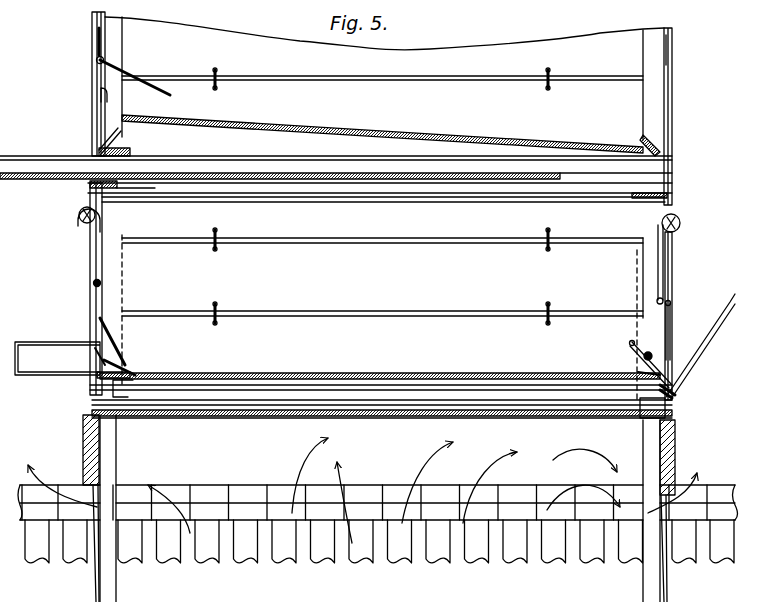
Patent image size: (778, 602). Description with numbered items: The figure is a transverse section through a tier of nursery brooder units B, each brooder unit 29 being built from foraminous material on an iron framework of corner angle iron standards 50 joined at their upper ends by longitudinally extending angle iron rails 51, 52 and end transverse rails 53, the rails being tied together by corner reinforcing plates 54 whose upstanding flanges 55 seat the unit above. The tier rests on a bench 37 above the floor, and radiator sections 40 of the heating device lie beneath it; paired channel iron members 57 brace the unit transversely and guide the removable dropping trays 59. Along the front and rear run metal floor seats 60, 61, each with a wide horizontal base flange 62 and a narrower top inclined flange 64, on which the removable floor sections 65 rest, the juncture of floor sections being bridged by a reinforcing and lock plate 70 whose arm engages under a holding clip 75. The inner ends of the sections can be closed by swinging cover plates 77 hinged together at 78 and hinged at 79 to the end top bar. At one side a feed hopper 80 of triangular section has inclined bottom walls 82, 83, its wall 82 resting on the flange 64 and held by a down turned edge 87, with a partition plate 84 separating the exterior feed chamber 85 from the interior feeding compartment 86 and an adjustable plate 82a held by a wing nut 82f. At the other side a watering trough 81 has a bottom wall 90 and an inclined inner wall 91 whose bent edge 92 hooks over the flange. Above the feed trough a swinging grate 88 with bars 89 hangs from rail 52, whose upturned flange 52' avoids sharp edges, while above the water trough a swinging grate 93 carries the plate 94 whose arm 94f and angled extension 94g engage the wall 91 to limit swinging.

The brooder unit 29 is at (88, 55).
The swinging grate 93 is at (103, 45).
The plate 94 is at (140, 82).
The hinge connection 78 is at (218, 76).
The swinging door or cover plate 77 is at (357, 106).
The floor section 65 is at (390, 130).
The nursery brooder unit B is at (653, 118).
The holding clip 75 is at (97, 95).
The metal floor seat 60 is at (96, 150).
The metal floor seat 61 is at (672, 146).
The side and end flange 55 is at (672, 165).
The corner reinforcing plate 54 is at (674, 194).
The longitudinally extending angle iron rail 52 is at (407, 200).
The upturned flange 52' is at (378, 223).
The longitudinally extending angle iron rail 51 is at (92, 190).
The removable dropping tray 59 is at (45, 180).
The end transversely extending angle iron rail 53 is at (381, 291).
The hinge connection 79 is at (551, 240).
The swinging grate 88 is at (665, 270).
The longitudinally extending bar 89 is at (665, 290).
The corner angle iron standard 50 is at (95, 284).
The arm 94f is at (108, 343).
The angled extension 94g is at (128, 360).
The bent forward edge 92 is at (128, 362).
The inclined inner wall 91 is at (97, 357).
The top inclined flange 64 is at (96, 372).
The watering trough 81 is at (45, 378).
The bottom wall 90 is at (66, 378).
The partition plate 84 is at (668, 334).
The compartment 86 is at (657, 337).
The chamber 85 is at (717, 322).
The inclined bottom wall 82 is at (650, 365).
The adjustable plate 82a is at (646, 353).
The wing nut 82f is at (673, 375).
The down turned forward edge 87 is at (640, 366).
The inclined bottom wall 83 is at (712, 336).
The feed hopper 80 is at (693, 366).
The base flange 62 is at (638, 406).
The bench 37 is at (84, 443).
The radiator section 40 is at (378, 509).
The channel iron member 57 is at (470, 428).
The reinforcing and lock plate 70 is at (452, 375).